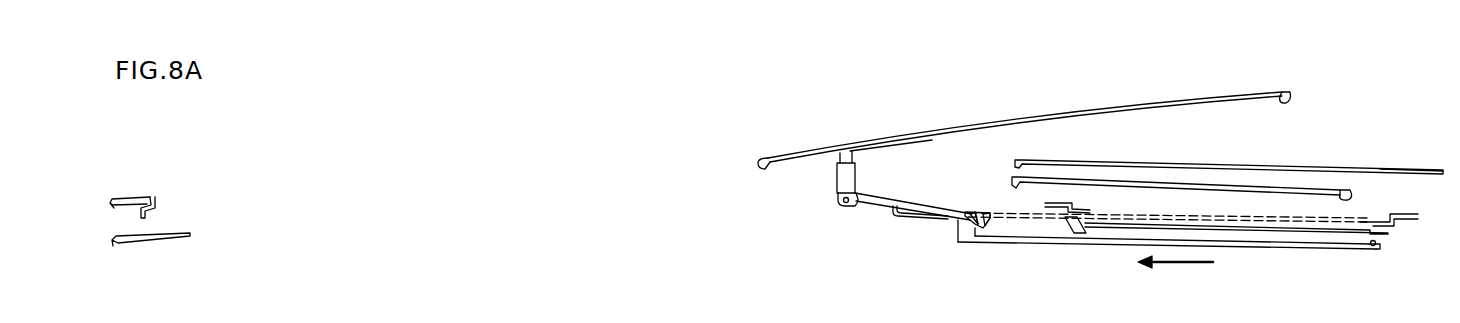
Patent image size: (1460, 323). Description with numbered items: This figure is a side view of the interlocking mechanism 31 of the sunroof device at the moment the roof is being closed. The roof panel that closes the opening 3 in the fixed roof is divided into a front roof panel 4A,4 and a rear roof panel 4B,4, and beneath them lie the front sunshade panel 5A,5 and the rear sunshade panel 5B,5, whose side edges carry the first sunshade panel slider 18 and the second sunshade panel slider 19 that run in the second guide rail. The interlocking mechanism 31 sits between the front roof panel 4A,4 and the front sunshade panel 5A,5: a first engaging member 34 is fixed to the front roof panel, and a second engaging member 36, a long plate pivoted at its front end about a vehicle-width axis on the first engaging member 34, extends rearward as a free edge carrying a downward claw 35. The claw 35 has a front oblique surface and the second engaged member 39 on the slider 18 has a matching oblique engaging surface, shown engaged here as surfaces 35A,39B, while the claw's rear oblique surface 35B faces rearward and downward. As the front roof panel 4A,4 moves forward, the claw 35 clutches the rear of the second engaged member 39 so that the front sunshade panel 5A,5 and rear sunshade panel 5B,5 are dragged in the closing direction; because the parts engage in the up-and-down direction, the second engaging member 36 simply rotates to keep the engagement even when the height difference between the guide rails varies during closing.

The opening 3 is at (152, 200).
The front roof panel 4A,4 is at (1049, 112).
The rear roof panel 4B,4 is at (1163, 186).
The front sunshade panel 5A,5 is at (1055, 177).
The rear sunshade panel 5B,5 is at (1280, 215).
The first sunshade panel slider 18 is at (1240, 240).
The second sunshade panel slider 19 is at (1385, 238).
The interlocking mechanism 31 is at (918, 237).
The first engaging member 34 is at (846, 181).
The claw 35 is at (976, 212).
The front oblique surface and oblique engaging surface 35A,39B is at (982, 228).
The rear oblique surface 35B is at (992, 222).
The second engaging member 36 is at (877, 197).
The second engaged member 39 is at (962, 224).